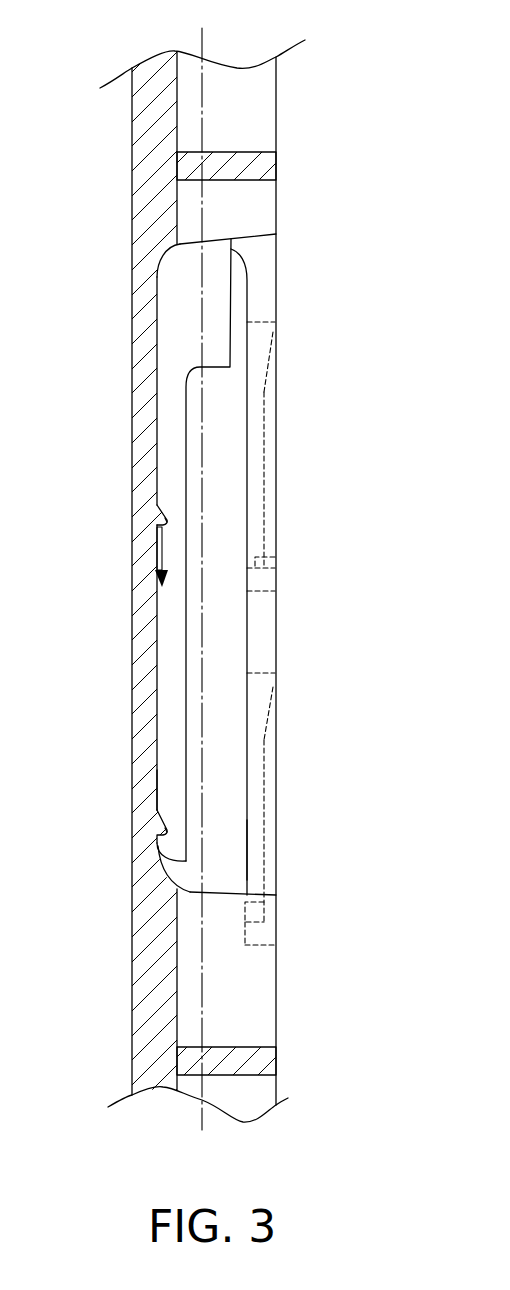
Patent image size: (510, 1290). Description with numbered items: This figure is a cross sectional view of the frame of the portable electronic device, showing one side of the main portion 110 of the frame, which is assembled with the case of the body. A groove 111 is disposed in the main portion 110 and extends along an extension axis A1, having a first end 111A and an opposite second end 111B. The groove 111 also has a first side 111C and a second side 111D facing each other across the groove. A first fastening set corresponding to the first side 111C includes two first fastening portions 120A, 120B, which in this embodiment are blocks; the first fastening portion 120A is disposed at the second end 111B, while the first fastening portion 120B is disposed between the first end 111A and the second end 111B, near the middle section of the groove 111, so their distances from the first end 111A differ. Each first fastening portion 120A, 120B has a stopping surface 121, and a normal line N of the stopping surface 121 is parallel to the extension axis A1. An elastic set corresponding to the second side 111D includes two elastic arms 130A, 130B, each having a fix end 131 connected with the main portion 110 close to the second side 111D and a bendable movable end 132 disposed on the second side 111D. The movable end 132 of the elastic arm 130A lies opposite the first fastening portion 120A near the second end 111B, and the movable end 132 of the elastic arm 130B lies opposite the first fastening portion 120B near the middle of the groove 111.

The extension axis A1 is at (204, 570).
The main portion 110 is at (148, 743).
The groove 111 is at (184, 437).
The first end 111A is at (164, 262).
The second end 111B is at (165, 869).
The first side 111C is at (151, 792).
The second side 111D is at (256, 852).
The first fastening portion 120A is at (160, 810).
The first fastening portion 120B is at (165, 515).
The stopping surface 121 is at (162, 531).
The elastic arm 130A is at (264, 823).
The elastic arm 130B is at (264, 472).
The fix end 131 is at (262, 330).
The movable end 132 is at (264, 557).
The normal line N is at (163, 563).